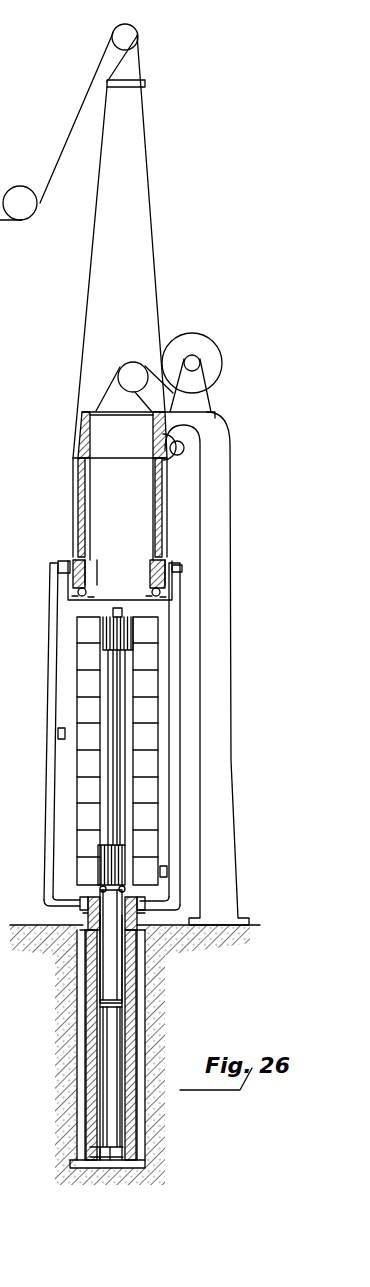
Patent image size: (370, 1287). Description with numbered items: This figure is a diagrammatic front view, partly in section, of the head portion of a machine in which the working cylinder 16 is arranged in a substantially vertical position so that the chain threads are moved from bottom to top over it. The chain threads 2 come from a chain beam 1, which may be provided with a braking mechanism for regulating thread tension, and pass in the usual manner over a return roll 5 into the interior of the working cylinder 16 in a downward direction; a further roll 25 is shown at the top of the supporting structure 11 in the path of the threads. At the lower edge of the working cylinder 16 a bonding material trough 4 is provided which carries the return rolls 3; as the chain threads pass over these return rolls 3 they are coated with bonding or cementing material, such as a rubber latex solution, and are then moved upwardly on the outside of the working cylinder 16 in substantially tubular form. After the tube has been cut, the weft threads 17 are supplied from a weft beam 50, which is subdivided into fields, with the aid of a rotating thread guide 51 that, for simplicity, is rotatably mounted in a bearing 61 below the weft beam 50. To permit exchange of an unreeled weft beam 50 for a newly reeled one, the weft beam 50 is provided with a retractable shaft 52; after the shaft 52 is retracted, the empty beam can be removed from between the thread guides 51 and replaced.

The chain beam 1 is at (216, 357).
The chain threads 2 is at (103, 395).
The return rolls 3 is at (150, 592).
The bonding material trough 4 is at (68, 592).
The return roll 5 is at (133, 368).
The mast 11 is at (221, 480).
The working cylinder 16 is at (78, 507).
The weft threads 17 is at (58, 732).
The top pulley 25 is at (139, 39).
The weft beam 50 is at (80, 818).
The rotating thread guide 51 is at (43, 870).
The retractable shaft 52 is at (103, 968).
The bearing 61 is at (135, 1055).